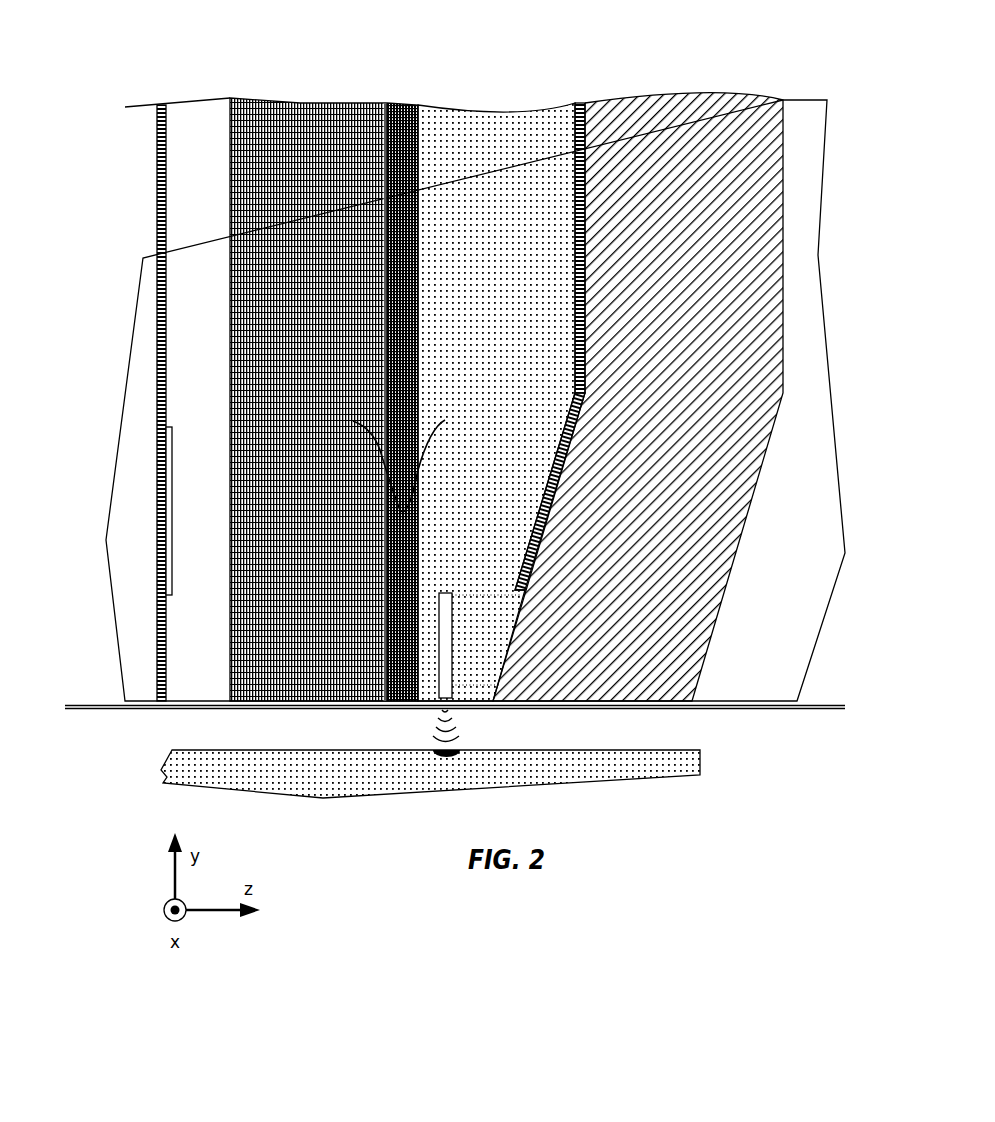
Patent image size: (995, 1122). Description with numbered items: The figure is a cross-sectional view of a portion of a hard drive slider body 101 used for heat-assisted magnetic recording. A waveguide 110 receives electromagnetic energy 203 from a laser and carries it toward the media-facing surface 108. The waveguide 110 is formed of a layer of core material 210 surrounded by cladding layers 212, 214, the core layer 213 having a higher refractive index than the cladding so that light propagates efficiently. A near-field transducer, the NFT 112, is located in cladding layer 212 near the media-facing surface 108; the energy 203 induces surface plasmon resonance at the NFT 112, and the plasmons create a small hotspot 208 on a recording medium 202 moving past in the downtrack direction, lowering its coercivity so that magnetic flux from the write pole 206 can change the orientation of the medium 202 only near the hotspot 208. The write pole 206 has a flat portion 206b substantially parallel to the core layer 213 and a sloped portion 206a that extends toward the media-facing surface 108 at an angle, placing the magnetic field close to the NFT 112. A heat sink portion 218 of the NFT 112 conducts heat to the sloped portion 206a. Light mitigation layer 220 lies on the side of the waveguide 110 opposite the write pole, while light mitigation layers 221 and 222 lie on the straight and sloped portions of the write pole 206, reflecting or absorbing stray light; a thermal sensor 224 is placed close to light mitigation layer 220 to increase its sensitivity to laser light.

The slider body 101 is at (160, 40).
The waveguide 110 is at (235, 65).
The cladding layer 214 is at (253, 100).
The core layer 213 is at (384, 278).
The core material layer 210 is at (405, 103).
The cladding layer 212 is at (447, 117).
The electromagnetic energy 203 is at (378, 448).
The light mitigation layer 220 is at (158, 285).
The light mitigation layer 221 is at (577, 232).
The light mitigation layer 222 is at (556, 452).
The thermal sensor 224 is at (167, 510).
The magnetic write pole 206 is at (638, 382).
The sloped portion 206a is at (638, 547).
The flat portion 206b is at (684, 243).
The NFT 112 is at (446, 682).
The heat sink portion 218 is at (482, 668).
The media-facing surface 108 is at (743, 705).
The recording medium 202 is at (222, 772).
The hotspot 208 is at (447, 757).